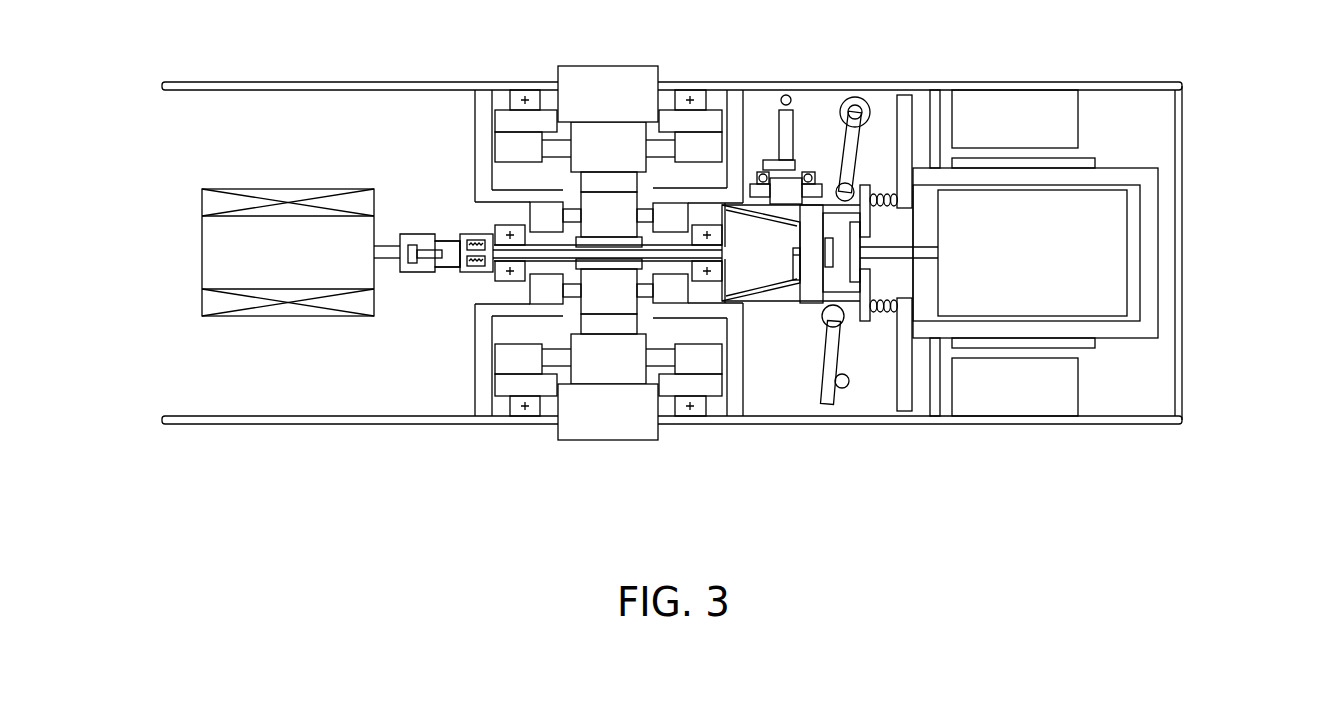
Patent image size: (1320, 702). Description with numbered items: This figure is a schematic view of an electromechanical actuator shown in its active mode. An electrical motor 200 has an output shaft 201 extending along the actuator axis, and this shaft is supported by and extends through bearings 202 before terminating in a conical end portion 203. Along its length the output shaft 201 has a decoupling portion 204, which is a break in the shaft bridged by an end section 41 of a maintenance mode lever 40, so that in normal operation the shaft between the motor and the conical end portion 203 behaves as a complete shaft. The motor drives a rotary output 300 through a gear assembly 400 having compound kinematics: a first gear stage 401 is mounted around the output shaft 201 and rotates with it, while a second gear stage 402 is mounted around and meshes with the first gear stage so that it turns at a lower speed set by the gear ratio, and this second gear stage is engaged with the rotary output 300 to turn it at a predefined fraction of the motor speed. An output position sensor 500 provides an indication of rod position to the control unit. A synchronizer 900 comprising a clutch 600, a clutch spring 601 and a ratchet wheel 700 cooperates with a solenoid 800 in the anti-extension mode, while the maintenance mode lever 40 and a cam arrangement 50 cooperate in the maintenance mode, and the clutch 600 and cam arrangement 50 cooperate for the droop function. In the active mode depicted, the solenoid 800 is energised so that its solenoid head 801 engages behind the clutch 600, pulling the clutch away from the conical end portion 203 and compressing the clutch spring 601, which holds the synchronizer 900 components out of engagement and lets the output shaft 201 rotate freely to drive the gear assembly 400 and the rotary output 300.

The electrical motor 200 is at (241, 280).
The decoupling portion 204 is at (435, 253).
The end section 41 is at (446, 264).
The output shaft 201 is at (512, 253).
The bearings 202 is at (498, 275).
The gear assembly 400 is at (573, 256).
The first gear stage 401 is at (550, 215).
The second gear stage 402 is at (582, 130).
The rotary output 300 is at (643, 78).
The conical end portion 203 is at (749, 265).
The maintenance mode lever 40 is at (792, 288).
The cam arrangement 50 is at (785, 130).
The ratchet wheel 700 is at (850, 127).
The synchronizer 900 is at (815, 268).
The clutch 600 is at (858, 205).
The clutch spring 601 is at (880, 310).
The solenoid head 801 is at (855, 250).
The solenoid 800 is at (1117, 243).
The output position sensor 500 is at (1060, 105).